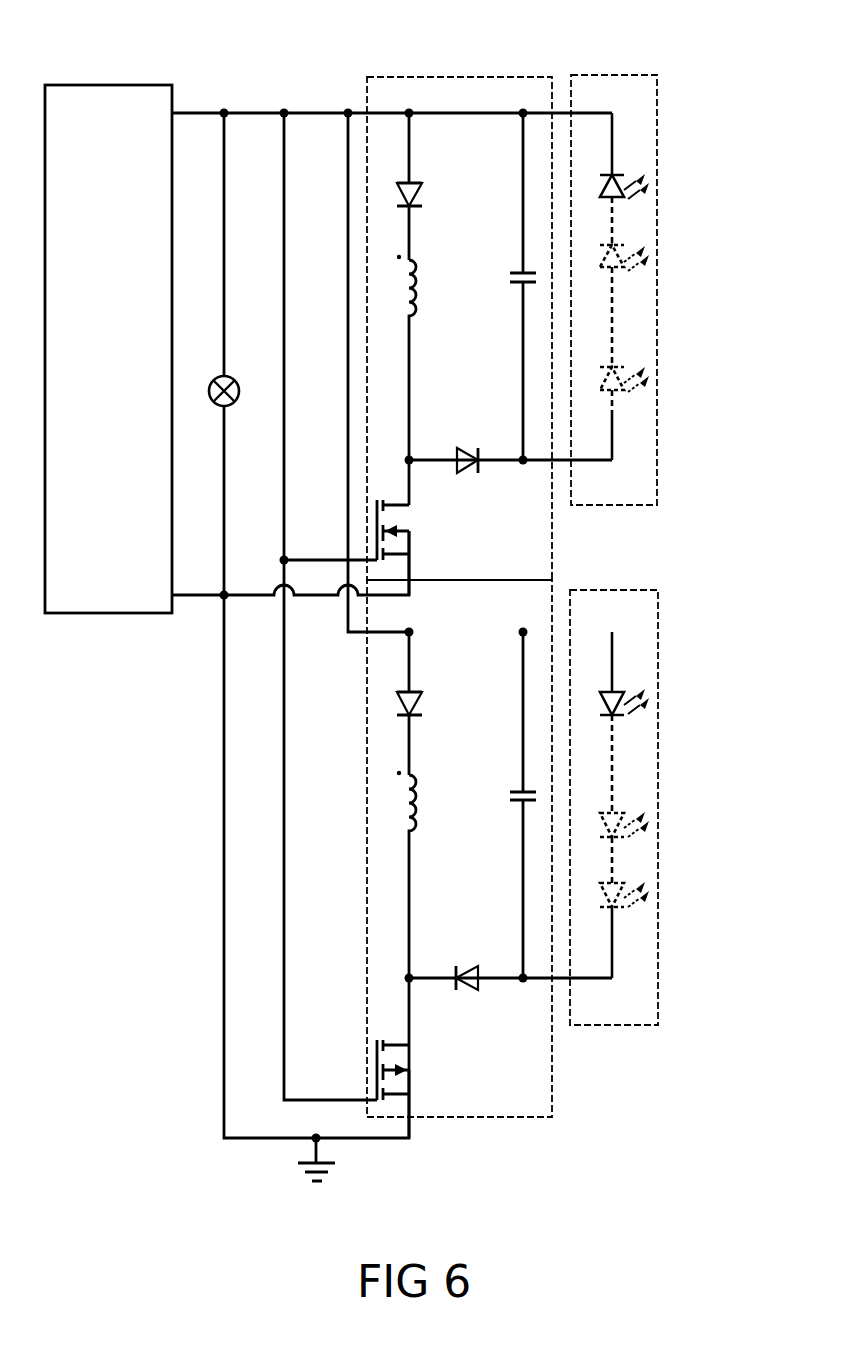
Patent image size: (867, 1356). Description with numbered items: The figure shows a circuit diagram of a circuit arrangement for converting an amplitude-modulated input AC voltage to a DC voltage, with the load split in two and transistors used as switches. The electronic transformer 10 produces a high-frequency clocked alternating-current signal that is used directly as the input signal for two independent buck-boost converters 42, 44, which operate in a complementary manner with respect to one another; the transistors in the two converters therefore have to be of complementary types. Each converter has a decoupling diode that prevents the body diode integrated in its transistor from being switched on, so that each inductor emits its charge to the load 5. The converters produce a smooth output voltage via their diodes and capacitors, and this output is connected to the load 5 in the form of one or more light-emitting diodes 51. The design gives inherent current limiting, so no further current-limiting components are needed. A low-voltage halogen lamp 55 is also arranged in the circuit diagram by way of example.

The electronic transformer 10 is at (123, 344).
The buck-boost converter 42 is at (463, 77).
The buck-boost converter 44 is at (474, 1117).
The load 5 is at (664, 541).
The light-emitting diode 51 is at (620, 173).
The low-voltage halogen lamp 55 is at (242, 378).